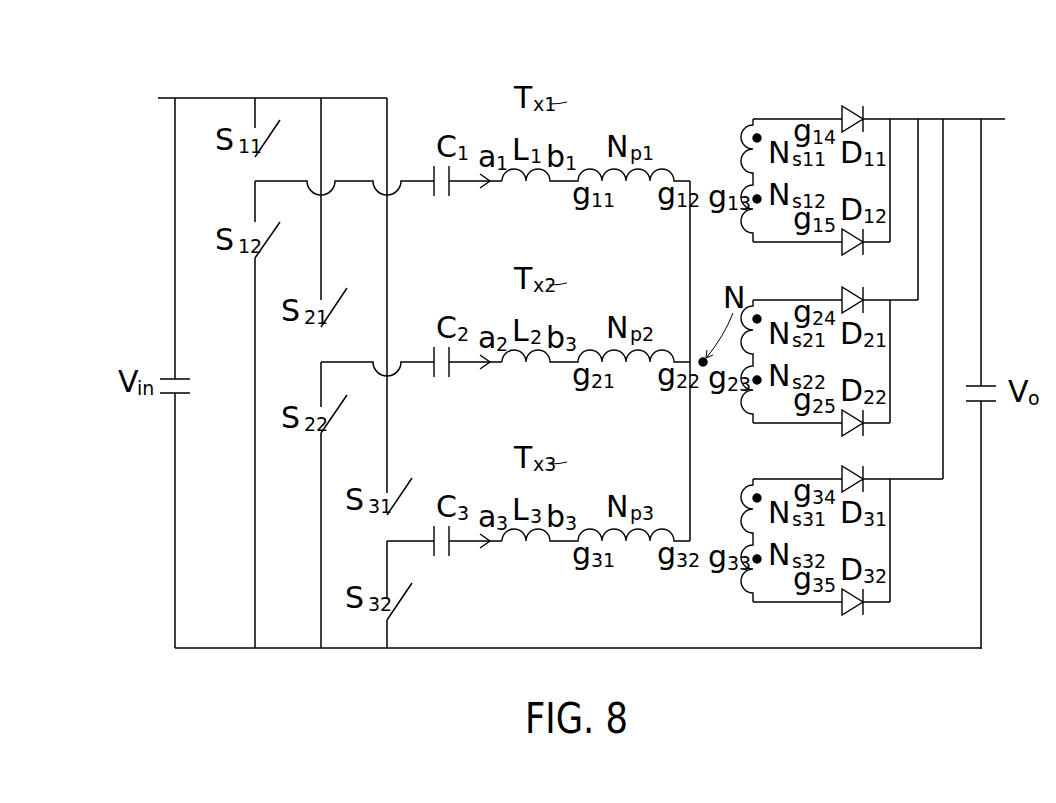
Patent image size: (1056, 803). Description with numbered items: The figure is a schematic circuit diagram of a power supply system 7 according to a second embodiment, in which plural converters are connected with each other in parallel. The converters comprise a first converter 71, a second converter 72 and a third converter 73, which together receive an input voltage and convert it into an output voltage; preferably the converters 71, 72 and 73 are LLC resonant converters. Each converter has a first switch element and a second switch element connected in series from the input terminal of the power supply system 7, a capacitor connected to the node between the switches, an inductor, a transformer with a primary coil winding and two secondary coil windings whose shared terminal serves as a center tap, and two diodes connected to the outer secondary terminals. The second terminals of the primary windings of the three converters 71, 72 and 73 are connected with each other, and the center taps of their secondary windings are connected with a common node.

The power supply system 7 is at (197, 62).
The first converter 71 is at (957, 93).
The second converter 72 is at (957, 335).
The third converter 73 is at (958, 528).